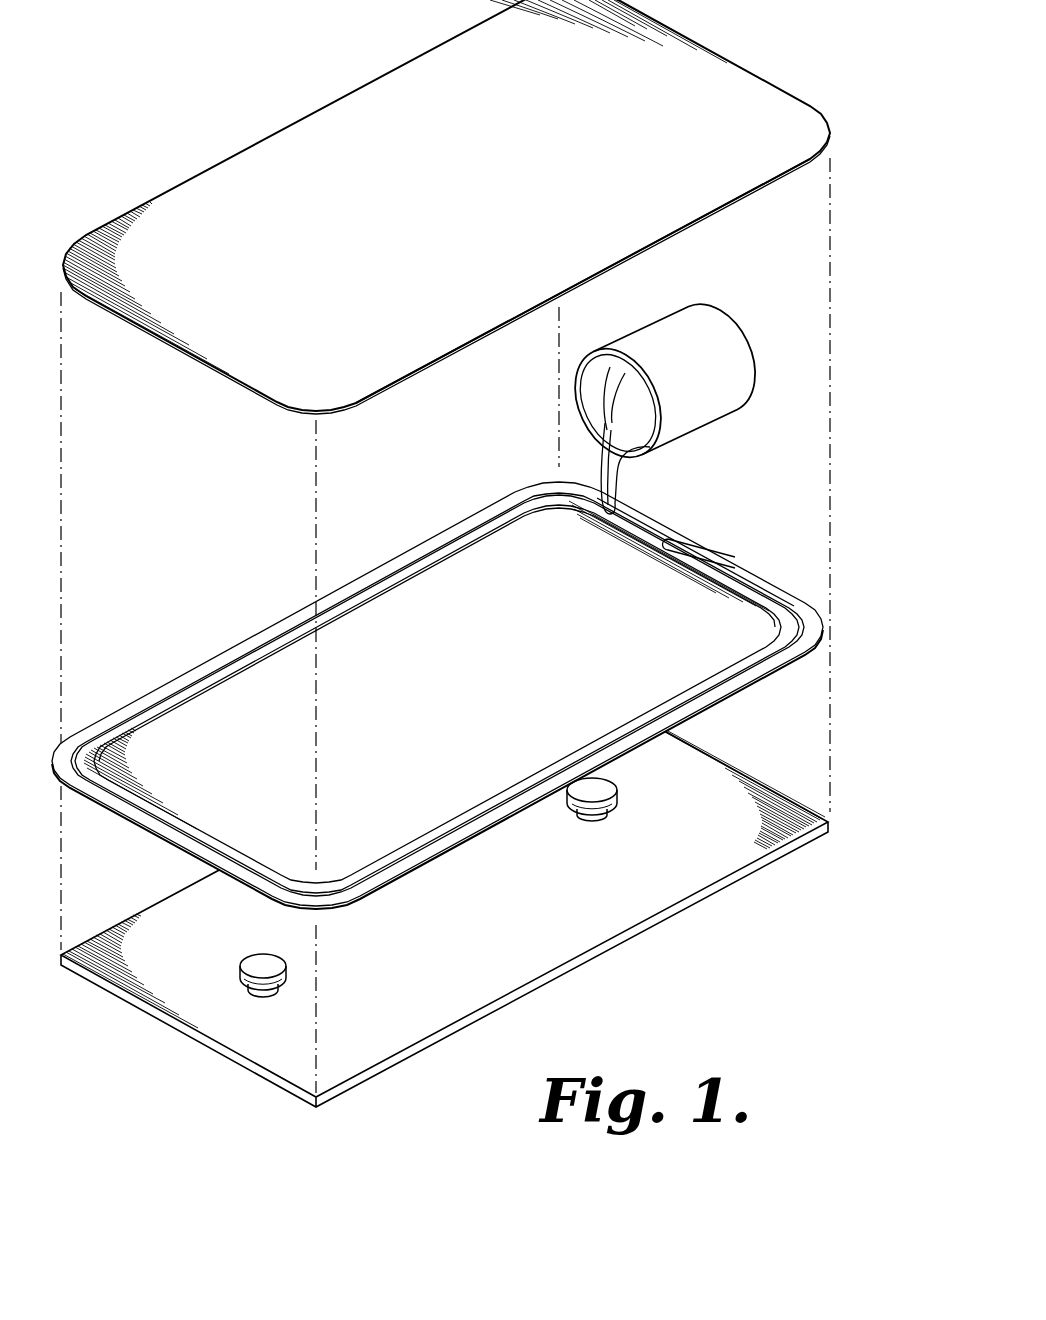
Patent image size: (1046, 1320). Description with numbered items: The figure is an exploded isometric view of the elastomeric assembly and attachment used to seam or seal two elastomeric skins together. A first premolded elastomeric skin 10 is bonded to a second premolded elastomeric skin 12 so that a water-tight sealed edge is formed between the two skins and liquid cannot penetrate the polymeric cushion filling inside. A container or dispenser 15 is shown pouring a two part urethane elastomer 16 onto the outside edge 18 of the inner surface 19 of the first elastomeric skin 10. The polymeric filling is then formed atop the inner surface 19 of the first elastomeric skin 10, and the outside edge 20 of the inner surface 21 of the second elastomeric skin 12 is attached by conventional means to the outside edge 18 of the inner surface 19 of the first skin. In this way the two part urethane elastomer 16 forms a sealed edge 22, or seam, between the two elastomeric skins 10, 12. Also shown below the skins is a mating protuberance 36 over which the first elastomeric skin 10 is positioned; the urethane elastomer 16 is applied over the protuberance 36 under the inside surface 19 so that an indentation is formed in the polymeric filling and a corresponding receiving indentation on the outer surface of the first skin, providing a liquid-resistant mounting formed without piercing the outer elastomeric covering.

The first premolded elastomeric skin 10 is at (822, 635).
The second premolded elastomeric skin 12 is at (745, 97).
The container or dispenser 15 is at (717, 423).
The two part urethane elastomer 16 is at (802, 627).
The outside edge of the inner surface of the first elastomeric skin 18 is at (802, 598).
The inner surface of the first elastomeric skin 19 is at (647, 697).
The outside edge of the inner surface of the second elastomeric skin 20 is at (770, 185).
The inner surface of the second elastomeric skin 21 is at (717, 217).
The sealed edge 22 is at (790, 660).
The mating protuberance 36 is at (257, 968).